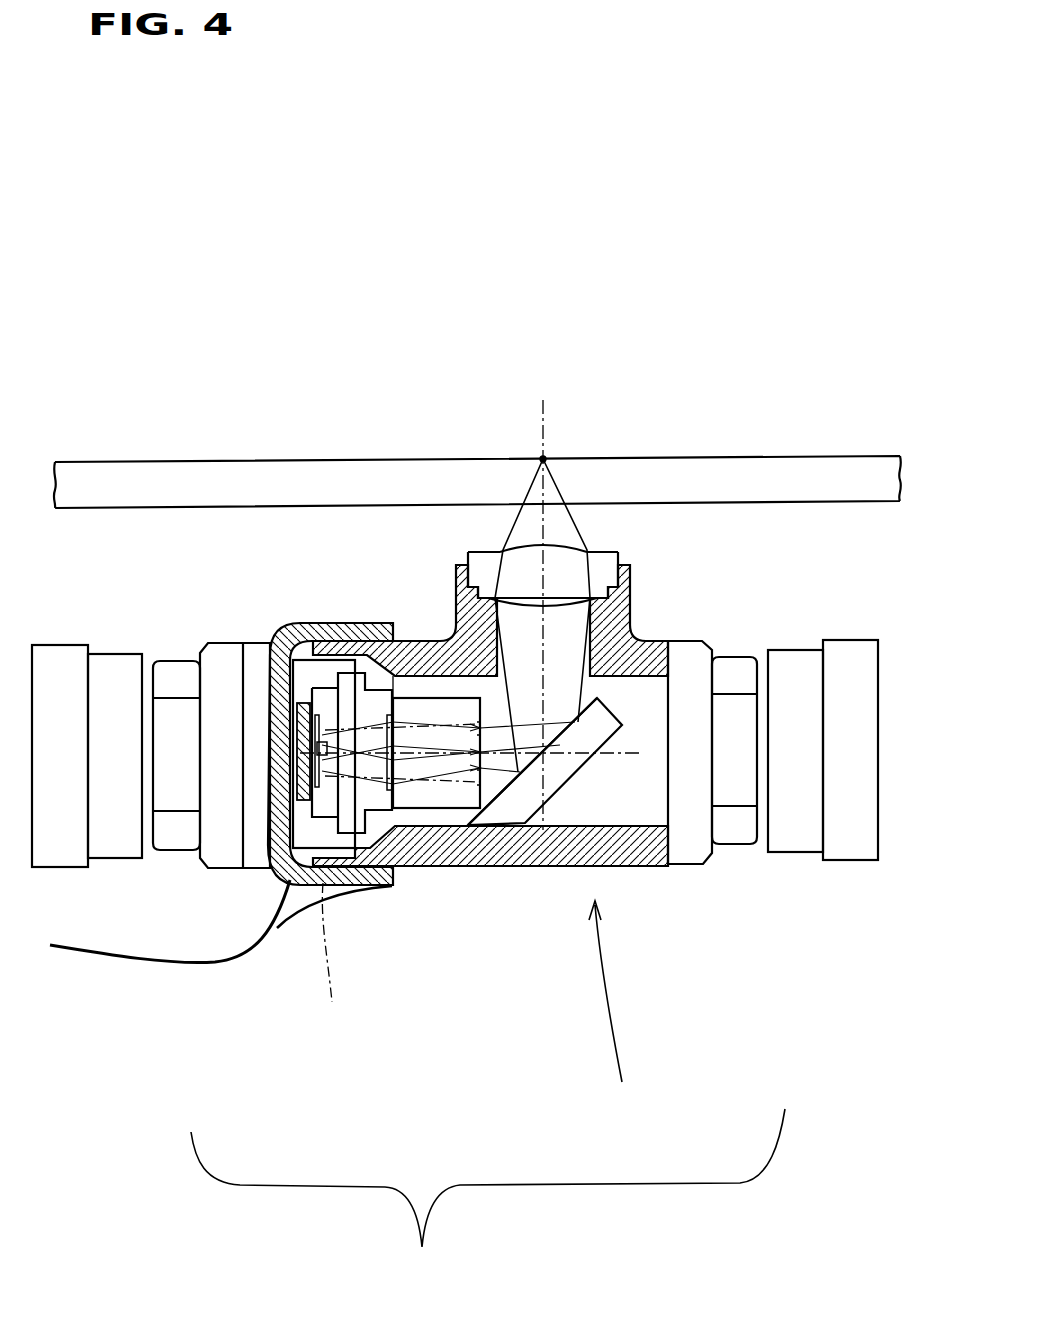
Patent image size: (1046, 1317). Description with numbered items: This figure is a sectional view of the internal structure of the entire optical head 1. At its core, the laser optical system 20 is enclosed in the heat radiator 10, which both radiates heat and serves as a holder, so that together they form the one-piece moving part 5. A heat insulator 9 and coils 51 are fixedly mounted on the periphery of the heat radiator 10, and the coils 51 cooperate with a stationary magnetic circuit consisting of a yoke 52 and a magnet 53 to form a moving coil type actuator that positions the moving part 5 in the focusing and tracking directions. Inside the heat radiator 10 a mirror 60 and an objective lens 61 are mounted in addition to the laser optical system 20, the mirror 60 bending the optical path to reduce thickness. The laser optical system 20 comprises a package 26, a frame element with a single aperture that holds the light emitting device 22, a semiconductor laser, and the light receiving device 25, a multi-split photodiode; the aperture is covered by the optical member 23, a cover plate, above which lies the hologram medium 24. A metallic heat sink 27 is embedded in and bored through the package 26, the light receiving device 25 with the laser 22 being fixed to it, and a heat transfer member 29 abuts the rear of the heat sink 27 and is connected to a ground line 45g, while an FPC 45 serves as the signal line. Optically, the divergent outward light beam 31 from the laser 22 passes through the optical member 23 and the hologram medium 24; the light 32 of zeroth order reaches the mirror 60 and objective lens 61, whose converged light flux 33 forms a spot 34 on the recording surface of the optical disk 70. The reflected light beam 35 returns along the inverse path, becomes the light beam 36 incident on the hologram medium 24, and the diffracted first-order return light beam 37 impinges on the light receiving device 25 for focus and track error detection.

The optical head 1 is at (488, 1203).
The moving part 5 is at (615, 1013).
The heat insulator 9 is at (228, 828).
The heat radiator 10 is at (655, 640).
The laser optical system 20 is at (405, 690).
The light emitting device 22 is at (324, 966).
The optical member 23 is at (427, 868).
The hologram medium 24 is at (503, 868).
The light receiving device 25 is at (345, 625).
The package 26 is at (298, 665).
The heat sink 27 is at (300, 722).
The heat transfer member 29 is at (277, 630).
The outward light beam 31 is at (358, 740).
The light of 0th order 32 is at (503, 668).
The light flux 33 is at (512, 530).
The spot 34 is at (543, 457).
The reflected light beam 35 is at (577, 557).
The light beam 36 is at (622, 727).
The return light beam 37 is at (400, 768).
The FPC 45 is at (132, 950).
The ground line 45g is at (347, 895).
The coils 51 is at (188, 657).
The yoke 52 is at (67, 658).
The magnet 53 is at (117, 657).
The mirror 60 is at (560, 767).
The objective lens 61 is at (600, 563).
The optical disk 70 is at (823, 456).